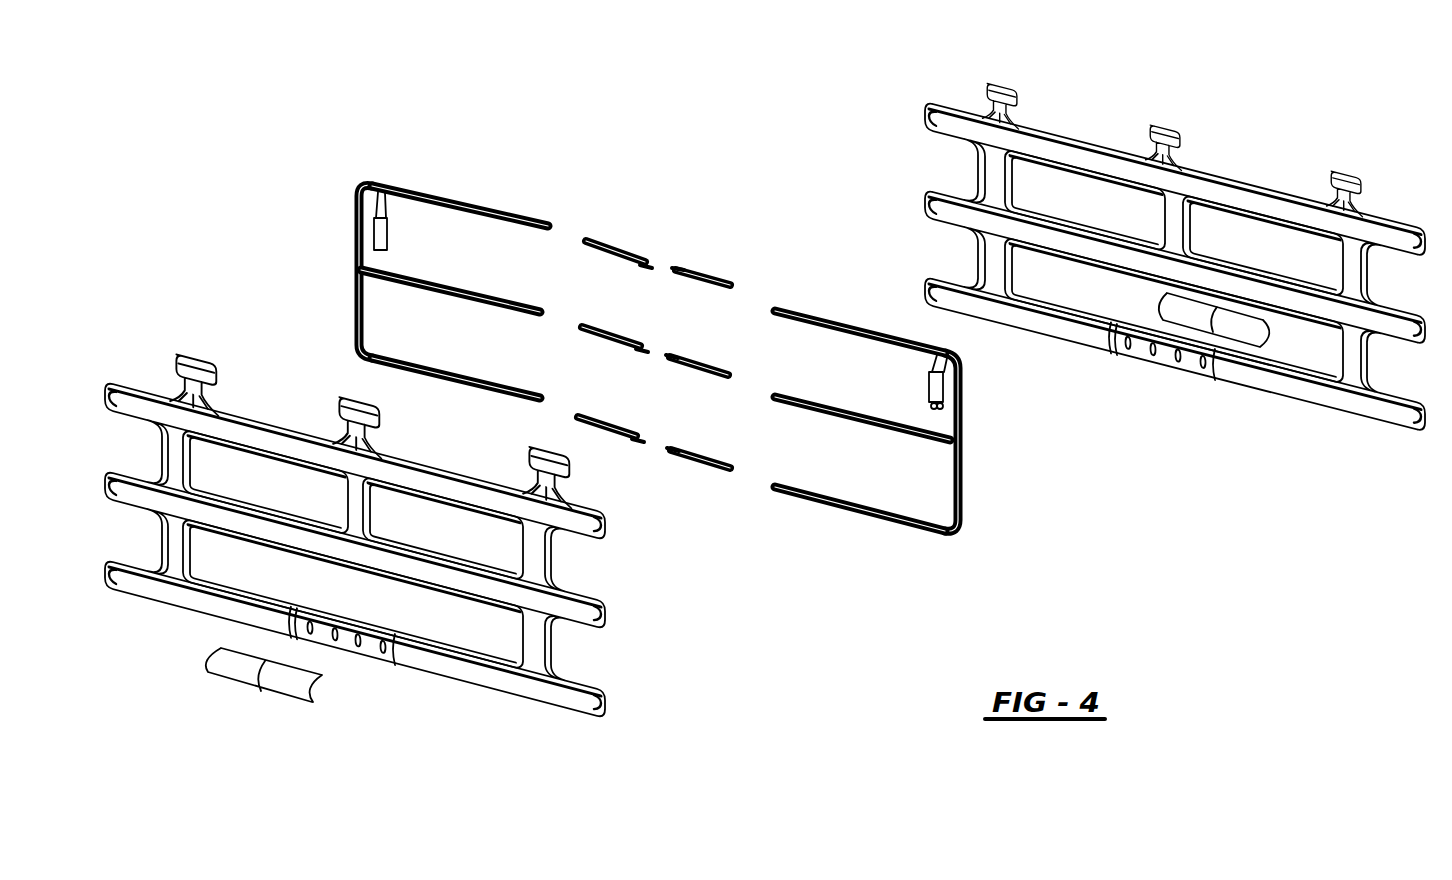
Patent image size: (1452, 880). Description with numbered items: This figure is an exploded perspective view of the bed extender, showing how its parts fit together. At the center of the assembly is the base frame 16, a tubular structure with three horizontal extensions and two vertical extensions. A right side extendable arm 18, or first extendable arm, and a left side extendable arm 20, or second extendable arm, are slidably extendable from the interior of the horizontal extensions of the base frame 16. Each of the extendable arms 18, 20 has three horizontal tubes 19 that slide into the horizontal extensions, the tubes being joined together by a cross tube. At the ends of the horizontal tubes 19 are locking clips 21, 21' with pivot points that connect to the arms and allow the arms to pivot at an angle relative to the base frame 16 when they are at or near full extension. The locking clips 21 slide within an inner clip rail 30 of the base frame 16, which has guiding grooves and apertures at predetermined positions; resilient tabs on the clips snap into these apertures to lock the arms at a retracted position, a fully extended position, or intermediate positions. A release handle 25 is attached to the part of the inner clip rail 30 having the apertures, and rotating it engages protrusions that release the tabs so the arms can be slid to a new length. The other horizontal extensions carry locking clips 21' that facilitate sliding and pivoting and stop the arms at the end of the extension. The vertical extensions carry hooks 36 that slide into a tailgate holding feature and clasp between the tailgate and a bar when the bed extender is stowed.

The base frame 16 is at (240, 420).
The right side extendable arm 18 is at (998, 430).
The horizontal tubes 19 is at (482, 196).
The left side extendable arm 20 is at (467, 158).
The locking clips 21 is at (680, 224).
The locking clips 21' is at (662, 360).
The release handle 25 is at (226, 675).
The inner clip rail 30 is at (373, 650).
The hooks 36 is at (195, 398).